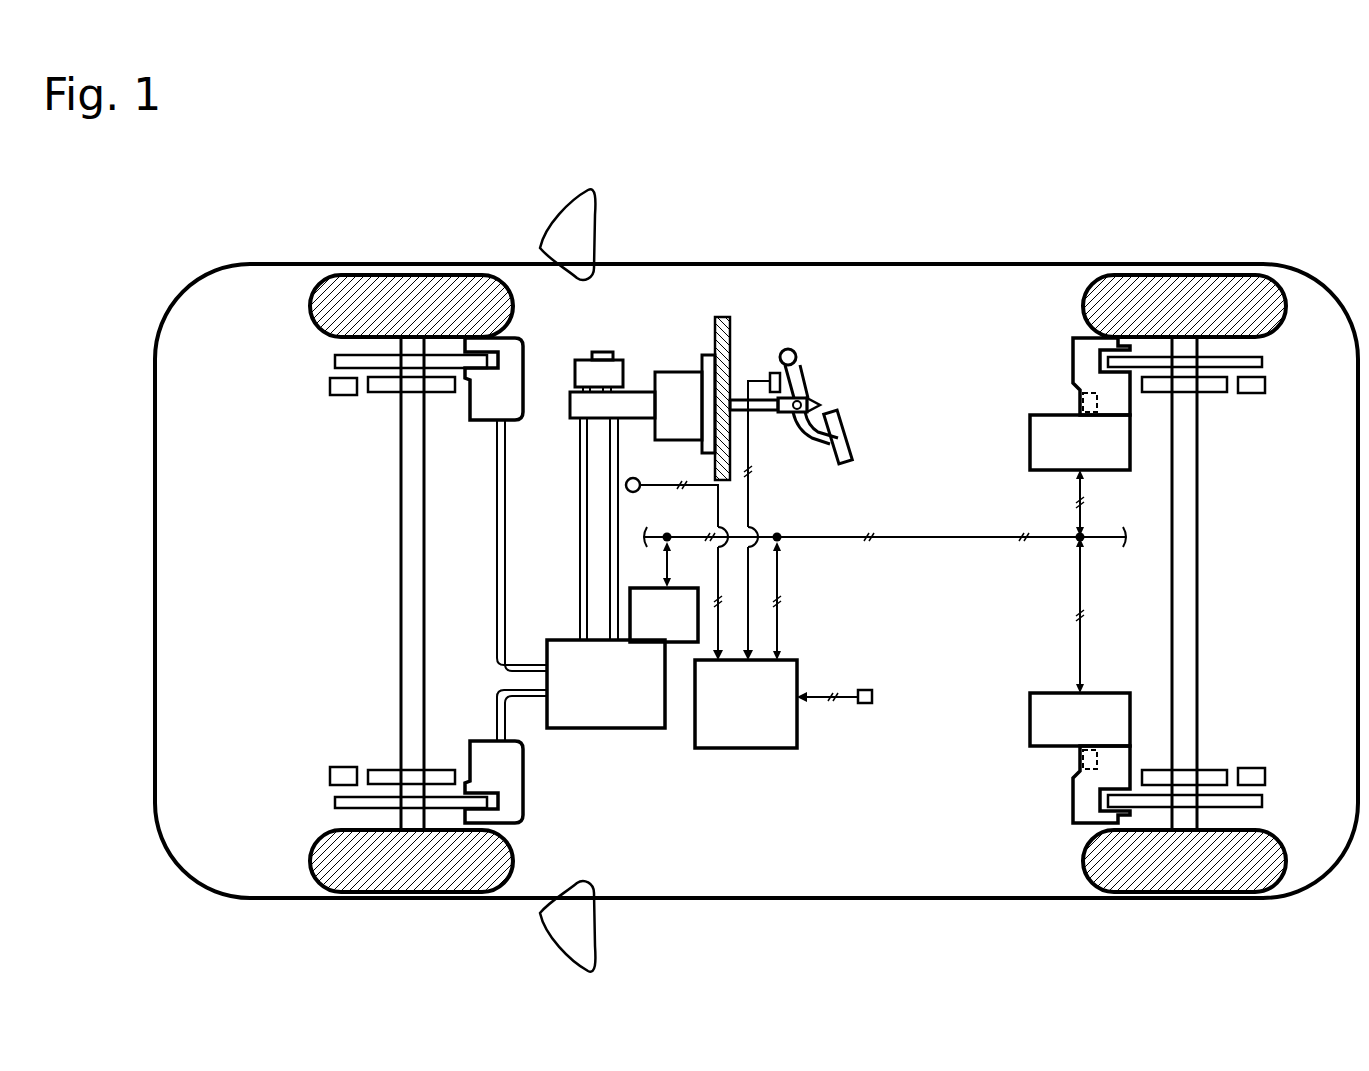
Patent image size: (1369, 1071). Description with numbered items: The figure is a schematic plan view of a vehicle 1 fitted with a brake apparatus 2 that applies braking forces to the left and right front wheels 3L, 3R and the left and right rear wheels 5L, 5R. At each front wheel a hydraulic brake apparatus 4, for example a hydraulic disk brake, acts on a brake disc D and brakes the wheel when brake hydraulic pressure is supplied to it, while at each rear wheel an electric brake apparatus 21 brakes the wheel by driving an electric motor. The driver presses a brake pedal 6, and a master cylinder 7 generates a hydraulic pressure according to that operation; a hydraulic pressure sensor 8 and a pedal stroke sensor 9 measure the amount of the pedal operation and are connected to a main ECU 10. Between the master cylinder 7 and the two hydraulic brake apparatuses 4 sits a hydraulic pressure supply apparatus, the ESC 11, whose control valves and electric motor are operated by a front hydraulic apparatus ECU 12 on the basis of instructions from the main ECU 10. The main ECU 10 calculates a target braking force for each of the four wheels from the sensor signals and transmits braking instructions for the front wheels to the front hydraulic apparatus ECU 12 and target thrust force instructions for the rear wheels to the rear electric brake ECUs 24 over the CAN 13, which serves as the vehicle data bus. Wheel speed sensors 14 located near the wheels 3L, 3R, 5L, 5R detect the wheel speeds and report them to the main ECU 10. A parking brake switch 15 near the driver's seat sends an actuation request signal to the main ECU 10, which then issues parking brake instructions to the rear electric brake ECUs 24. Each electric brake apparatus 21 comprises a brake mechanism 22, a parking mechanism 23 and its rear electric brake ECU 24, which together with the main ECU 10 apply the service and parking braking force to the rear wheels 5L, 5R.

The vehicle 1 is at (950, 256).
The brake apparatus 2 is at (1016, 306).
The right-side front wheel 3R is at (411, 306).
The left-side front wheel 3L is at (412, 870).
The right-side rear wheel 5R is at (1183, 306).
The left-side rear wheel 5L is at (1192, 870).
The hydraulic brake apparatus 4 is at (516, 353).
The brake disc D is at (335, 360).
The wheel speed sensor 14 is at (330, 386).
The brake pedal 6 is at (840, 438).
The master cylinder 7 is at (636, 392).
The hydraulic pressure sensor 8 is at (626, 482).
The pedal stroke sensor 9 is at (773, 373).
The main ECU 10 is at (758, 748).
The hydraulic pressure supply apparatus 11 is at (612, 713).
The front hydraulic apparatus ECU 12 is at (670, 633).
The CAN 13 is at (903, 541).
The parking brake switch 15 is at (865, 704).
The electric brake apparatus 21 is at (1060, 375).
The brake mechanism 22 is at (1090, 352).
The parking mechanism 23 is at (1080, 401).
The rear electric brake ECU 24 is at (1030, 447).